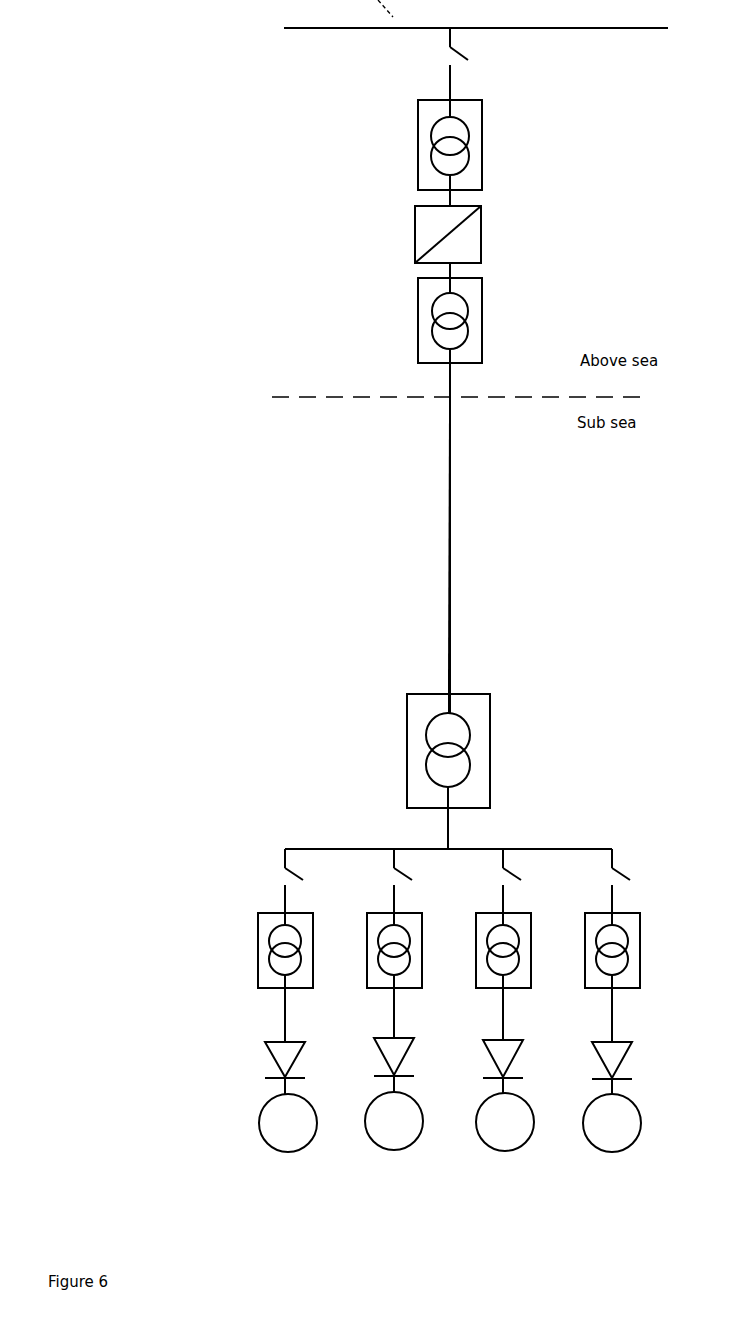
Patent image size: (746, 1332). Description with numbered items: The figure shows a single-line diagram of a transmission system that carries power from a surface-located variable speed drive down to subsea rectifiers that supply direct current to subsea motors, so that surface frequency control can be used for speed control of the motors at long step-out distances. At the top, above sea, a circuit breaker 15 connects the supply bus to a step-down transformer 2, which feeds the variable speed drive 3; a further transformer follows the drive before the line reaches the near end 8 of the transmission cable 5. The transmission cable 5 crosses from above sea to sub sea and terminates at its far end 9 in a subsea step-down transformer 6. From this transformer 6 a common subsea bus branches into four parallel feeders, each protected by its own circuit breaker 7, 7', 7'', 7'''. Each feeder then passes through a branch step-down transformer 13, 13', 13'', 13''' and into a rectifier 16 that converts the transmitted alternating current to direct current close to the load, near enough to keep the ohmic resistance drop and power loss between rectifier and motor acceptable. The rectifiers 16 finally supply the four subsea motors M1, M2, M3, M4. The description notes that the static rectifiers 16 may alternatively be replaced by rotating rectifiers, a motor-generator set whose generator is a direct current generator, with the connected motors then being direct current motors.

The step-down transformer 2 is at (400, 149).
The variable speed drive 3 is at (490, 232).
The transmission cable 5 is at (437, 498).
The step-down transformer 6 is at (397, 735).
The circuit breaker 7 is at (309, 864).
The circuit breaker 7' is at (418, 864).
The circuit breaker 7'' is at (528, 864).
The circuit breaker 7''' is at (632, 864).
The near end of transmission cable 8 is at (445, 393).
The far end of transmission cable 9 is at (443, 690).
The step-down transformer 13 is at (259, 950).
The step-down transformer 13' is at (376, 950).
The step-down transformer 13'' is at (484, 950).
The step-down transformer 13''' is at (594, 950).
The circuit breaker 15 is at (470, 52).
The rectifier 16 is at (307, 1040).
The motor M1 is at (288, 1123).
The motor M2 is at (394, 1121).
The motor M3 is at (505, 1122).
The motor M4 is at (612, 1123).